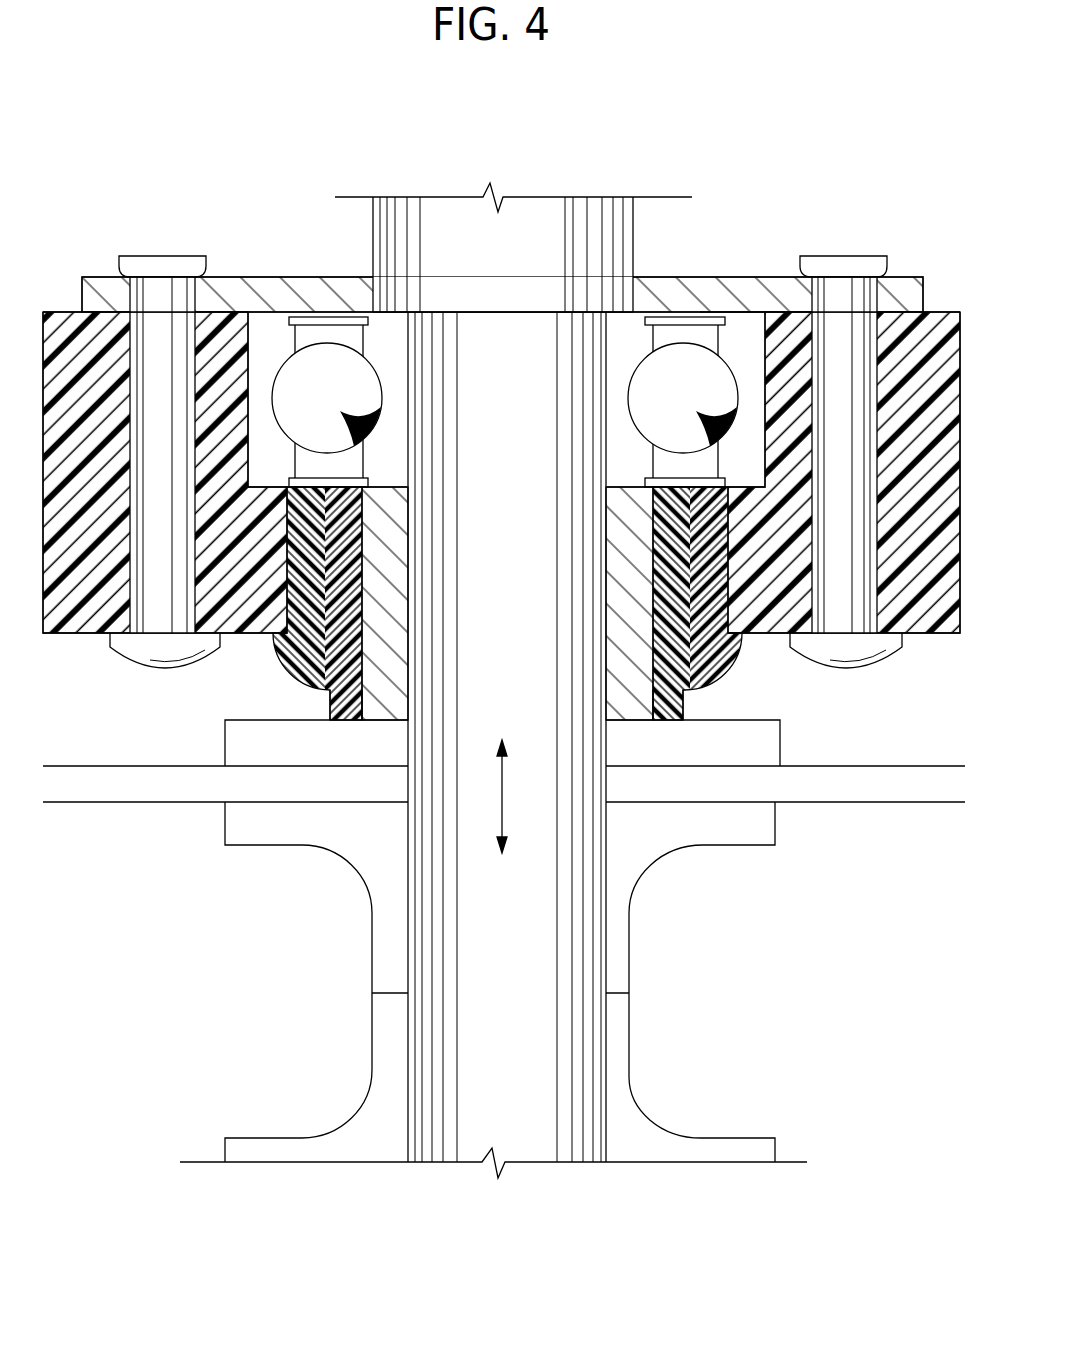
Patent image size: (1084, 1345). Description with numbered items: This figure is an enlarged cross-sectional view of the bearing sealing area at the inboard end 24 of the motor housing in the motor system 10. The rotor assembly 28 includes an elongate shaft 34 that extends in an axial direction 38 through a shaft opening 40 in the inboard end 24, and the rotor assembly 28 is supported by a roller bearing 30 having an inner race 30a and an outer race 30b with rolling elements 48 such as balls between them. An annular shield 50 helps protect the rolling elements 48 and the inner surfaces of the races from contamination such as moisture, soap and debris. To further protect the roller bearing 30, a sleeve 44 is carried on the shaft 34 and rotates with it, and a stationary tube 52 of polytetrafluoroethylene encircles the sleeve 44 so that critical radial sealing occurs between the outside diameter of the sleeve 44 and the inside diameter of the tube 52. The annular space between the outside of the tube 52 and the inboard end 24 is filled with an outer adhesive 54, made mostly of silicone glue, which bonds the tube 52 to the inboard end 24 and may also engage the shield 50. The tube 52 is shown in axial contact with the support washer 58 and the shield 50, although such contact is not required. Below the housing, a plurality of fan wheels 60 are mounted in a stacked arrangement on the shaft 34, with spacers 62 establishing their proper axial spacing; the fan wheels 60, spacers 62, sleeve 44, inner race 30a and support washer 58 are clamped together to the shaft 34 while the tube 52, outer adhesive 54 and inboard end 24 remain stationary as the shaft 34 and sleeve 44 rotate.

The motor system 10 is at (165, 160).
The inboard end 24 is at (74, 636).
The rotor assembly 28 is at (636, 224).
The roller bearing 30 is at (270, 328).
The inner race 30a is at (627, 342).
The outer race 30b is at (740, 333).
The shaft 34 is at (608, 940).
The axial direction 38 is at (500, 767).
The shaft opening 40 is at (290, 585).
The sleeve 44 is at (366, 489).
The rolling elements 48 is at (338, 350).
The annular shield 50 is at (669, 323).
The tube 52 is at (330, 705).
The outer adhesive 54 is at (733, 673).
The support washer 58 is at (781, 742).
The fan wheels 60 is at (905, 764).
The spacers 62 is at (741, 848).